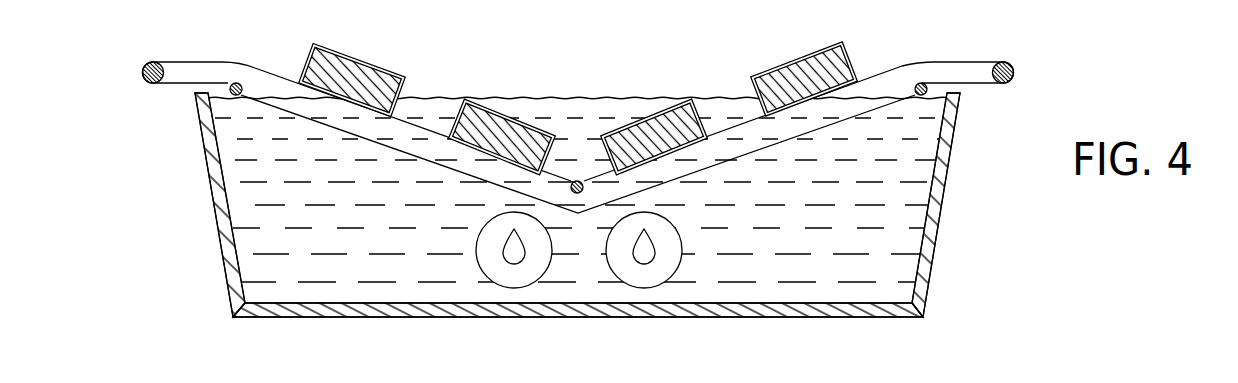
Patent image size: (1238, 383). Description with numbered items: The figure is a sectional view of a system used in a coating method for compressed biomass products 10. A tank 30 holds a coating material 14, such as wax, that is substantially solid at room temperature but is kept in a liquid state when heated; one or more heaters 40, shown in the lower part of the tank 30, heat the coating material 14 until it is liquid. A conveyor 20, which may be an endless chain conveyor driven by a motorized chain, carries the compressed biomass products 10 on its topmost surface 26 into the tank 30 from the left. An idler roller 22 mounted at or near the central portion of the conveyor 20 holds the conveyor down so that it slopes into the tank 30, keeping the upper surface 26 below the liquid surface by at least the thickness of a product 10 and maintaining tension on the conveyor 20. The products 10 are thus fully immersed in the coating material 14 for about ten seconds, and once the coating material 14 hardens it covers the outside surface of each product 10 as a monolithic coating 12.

The compressed biomass product 10 is at (604, 98).
The coating 12 is at (795, 60).
The coating material 14 is at (893, 193).
The conveyor 20 is at (600, 108).
The idler roller 22 is at (578, 170).
The topmost surface 26 is at (950, 62).
The tank 30 is at (940, 228).
The heater 40 is at (515, 279).